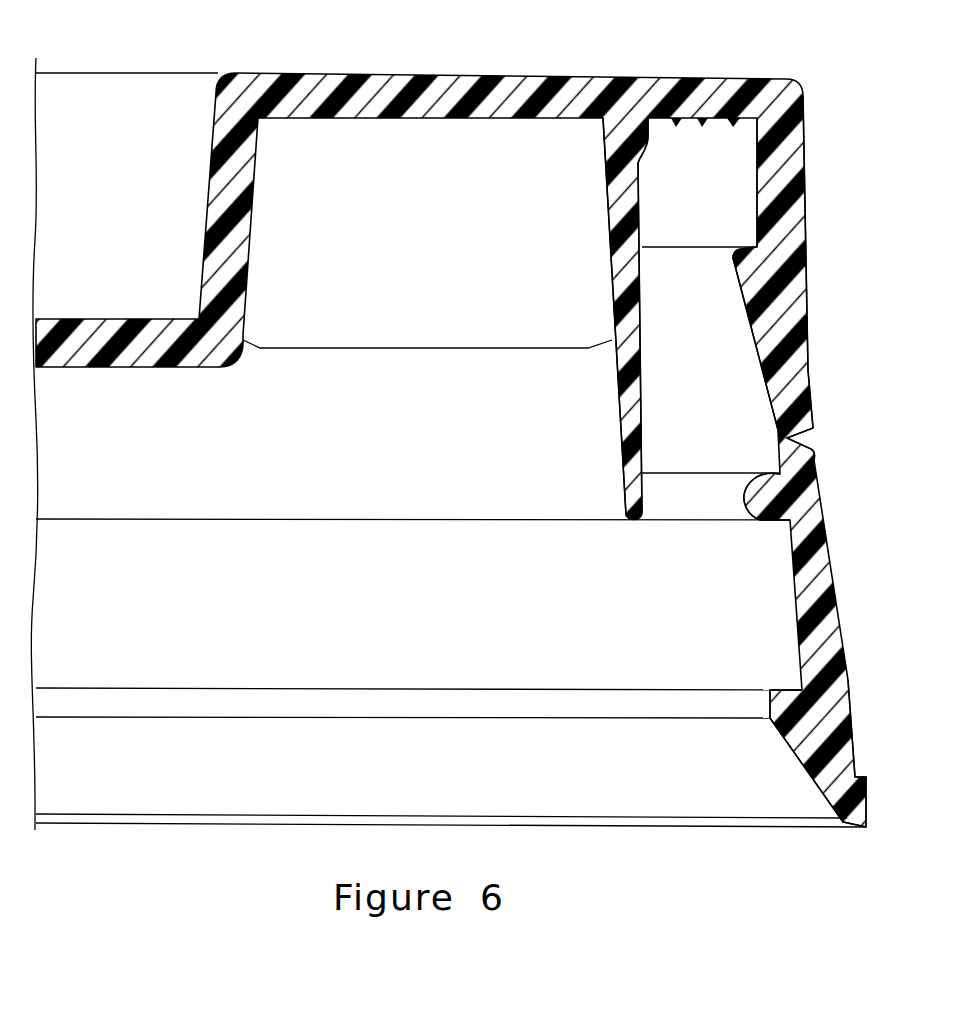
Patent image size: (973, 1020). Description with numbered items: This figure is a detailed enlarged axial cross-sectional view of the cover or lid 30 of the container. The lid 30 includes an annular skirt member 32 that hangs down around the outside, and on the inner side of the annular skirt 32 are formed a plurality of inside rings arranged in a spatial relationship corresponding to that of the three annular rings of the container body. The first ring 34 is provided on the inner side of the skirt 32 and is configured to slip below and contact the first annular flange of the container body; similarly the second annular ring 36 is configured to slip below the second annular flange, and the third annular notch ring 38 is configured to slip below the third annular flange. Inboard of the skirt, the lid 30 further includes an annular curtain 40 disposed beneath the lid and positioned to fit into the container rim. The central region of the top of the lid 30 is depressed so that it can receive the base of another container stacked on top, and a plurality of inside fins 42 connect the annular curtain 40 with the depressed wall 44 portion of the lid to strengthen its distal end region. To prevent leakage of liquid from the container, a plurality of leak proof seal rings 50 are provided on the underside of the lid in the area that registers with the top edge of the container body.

The cover lid 30 is at (340, 73).
The annular skirt member 32 is at (820, 355).
The first ring 34 is at (733, 257).
The second annular ring 36 is at (742, 500).
The third annular notch ring 38 is at (770, 720).
The annular curtain 40 is at (628, 500).
The inside fins 42 is at (352, 302).
The depressed wall 44 is at (790, 438).
The leak proof seal rings 50 is at (734, 124).